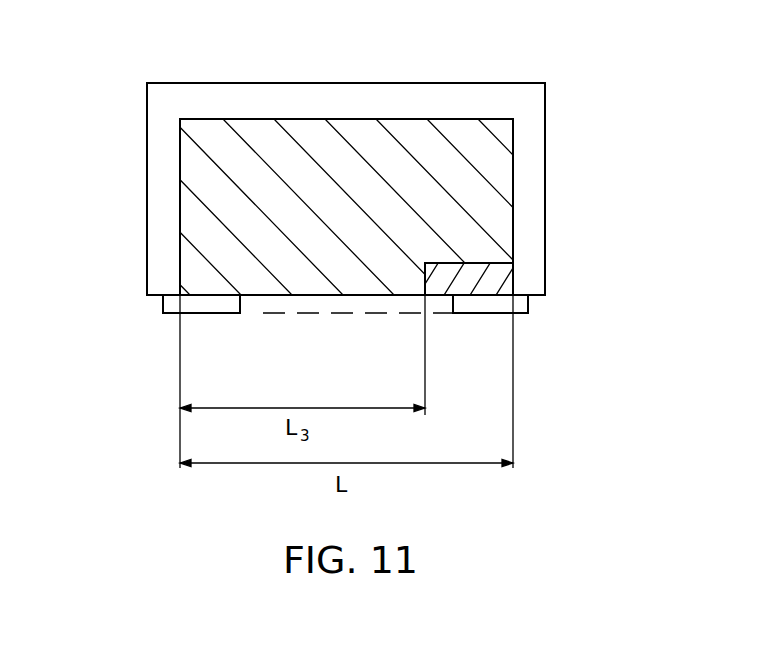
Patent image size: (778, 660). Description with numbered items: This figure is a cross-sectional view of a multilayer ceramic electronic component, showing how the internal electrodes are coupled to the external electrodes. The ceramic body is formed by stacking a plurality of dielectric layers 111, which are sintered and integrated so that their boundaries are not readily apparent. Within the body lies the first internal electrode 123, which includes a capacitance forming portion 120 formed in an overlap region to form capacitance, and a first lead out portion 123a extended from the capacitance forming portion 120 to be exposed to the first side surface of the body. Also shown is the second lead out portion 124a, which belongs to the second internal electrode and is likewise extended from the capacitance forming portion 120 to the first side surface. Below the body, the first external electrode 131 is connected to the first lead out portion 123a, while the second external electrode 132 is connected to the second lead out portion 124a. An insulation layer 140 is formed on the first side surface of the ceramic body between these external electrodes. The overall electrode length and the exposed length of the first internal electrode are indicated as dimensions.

The dielectric layer 111 is at (349, 98).
The capacitance forming portion 120 is at (513, 198).
The first internal electrode 123 is at (192, 186).
The first lead out portion 123a is at (193, 277).
The second lead out portion 124a is at (510, 282).
The first external electrode 131 is at (200, 303).
The second external electrode 132 is at (487, 303).
The insulation layer 140 is at (345, 313).